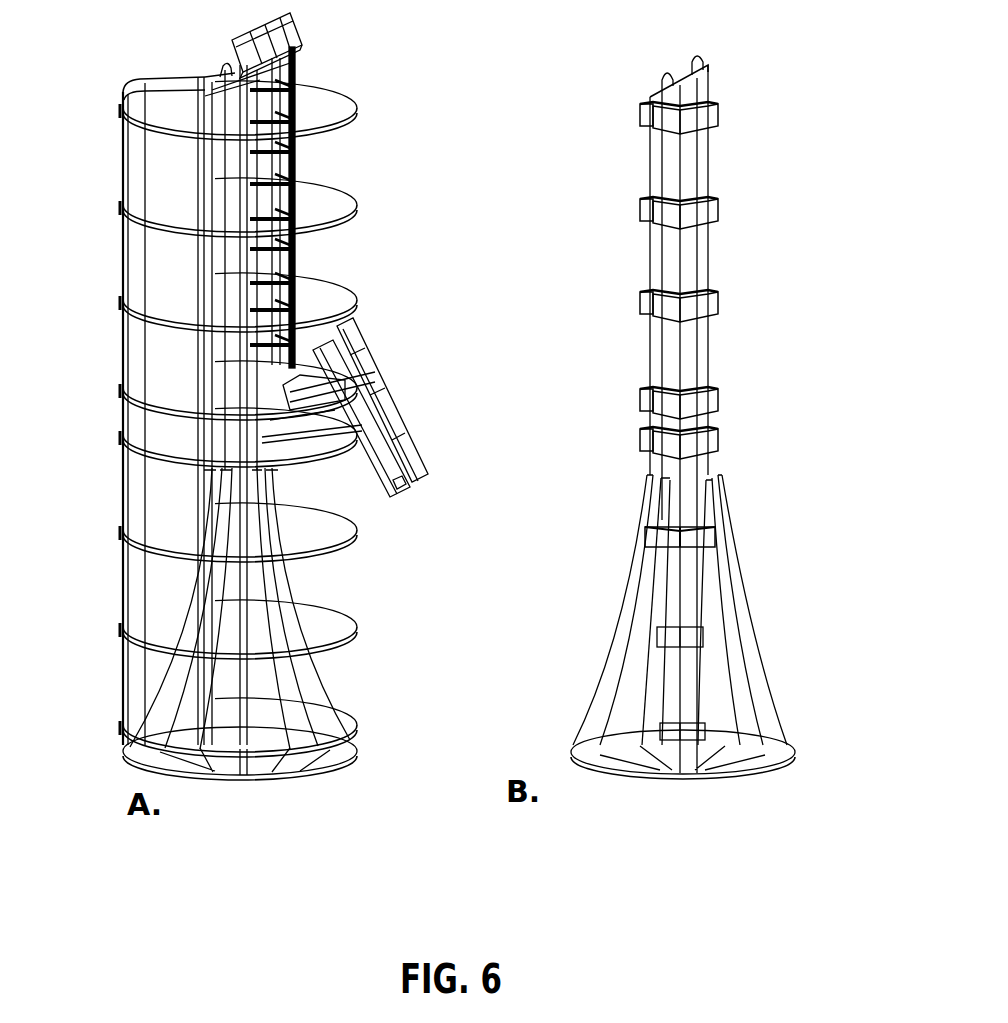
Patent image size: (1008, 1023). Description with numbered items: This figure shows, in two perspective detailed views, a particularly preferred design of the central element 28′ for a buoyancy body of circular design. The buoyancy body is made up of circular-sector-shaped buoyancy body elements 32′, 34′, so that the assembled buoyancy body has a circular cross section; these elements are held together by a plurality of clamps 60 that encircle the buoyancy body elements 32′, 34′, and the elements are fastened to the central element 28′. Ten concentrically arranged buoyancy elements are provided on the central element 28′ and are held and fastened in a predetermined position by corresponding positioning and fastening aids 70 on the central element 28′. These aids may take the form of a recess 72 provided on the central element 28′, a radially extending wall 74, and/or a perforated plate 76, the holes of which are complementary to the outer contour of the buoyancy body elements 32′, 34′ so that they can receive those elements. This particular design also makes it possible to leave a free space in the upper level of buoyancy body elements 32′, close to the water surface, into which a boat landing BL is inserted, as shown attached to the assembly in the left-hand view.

The central element 28′ is at (648, 161).
The buoyancy body element 32′ is at (128, 170).
The buoyancy body element 34′ is at (127, 477).
The boat landing BL is at (378, 377).
The clamps 60 is at (353, 532).
The positioning and fastening aids 70 is at (736, 637).
The recess 72 is at (717, 441).
The radially extending wall 74 is at (750, 710).
The perforated plate 76 is at (697, 778).